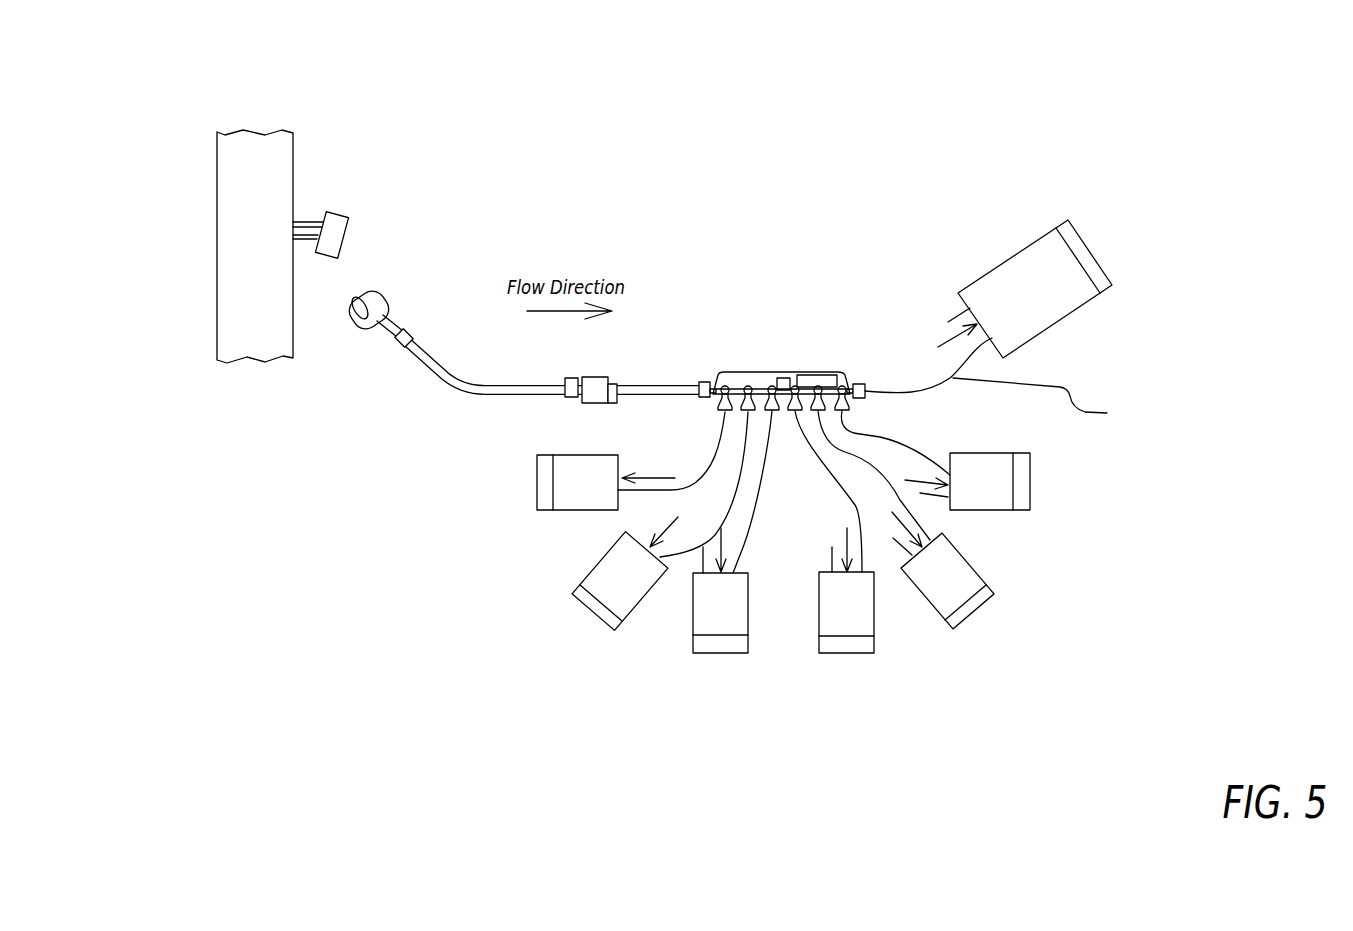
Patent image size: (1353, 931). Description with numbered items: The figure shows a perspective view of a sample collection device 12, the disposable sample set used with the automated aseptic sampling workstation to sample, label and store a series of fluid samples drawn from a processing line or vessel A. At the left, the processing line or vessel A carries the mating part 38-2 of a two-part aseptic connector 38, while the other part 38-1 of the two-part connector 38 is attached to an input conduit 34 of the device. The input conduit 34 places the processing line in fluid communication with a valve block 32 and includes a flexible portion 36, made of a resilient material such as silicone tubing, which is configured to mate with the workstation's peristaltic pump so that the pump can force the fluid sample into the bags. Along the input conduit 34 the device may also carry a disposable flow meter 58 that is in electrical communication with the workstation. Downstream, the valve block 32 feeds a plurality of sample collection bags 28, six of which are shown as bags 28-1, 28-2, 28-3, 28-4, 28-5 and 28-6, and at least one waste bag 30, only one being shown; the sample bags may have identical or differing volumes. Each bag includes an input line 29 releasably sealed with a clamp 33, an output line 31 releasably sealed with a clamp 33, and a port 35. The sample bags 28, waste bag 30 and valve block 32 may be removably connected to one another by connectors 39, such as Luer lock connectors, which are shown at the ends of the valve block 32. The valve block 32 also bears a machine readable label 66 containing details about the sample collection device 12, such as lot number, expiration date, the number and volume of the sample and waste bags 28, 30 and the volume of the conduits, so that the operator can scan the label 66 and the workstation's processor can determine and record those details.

The processing line or vessel A is at (296, 147).
The sample collection device 12 is at (801, 121).
The sample collection bag 28 is at (573, 510).
The sample collection bag 28-1 is at (631, 461).
The sample collection bag 28-2 is at (660, 521).
The sample collection bag 28-3 is at (732, 532).
The sample collection bag 28-4 is at (834, 532).
The sample collection bag 28-5 is at (906, 520).
The sample collection bag 28-6 is at (935, 460).
The input line 29 is at (1000, 383).
The waste bag 30 is at (1035, 289).
The output line 31 is at (938, 337).
The valve block 32 is at (744, 372).
The clamp 33 is at (947, 330).
The input conduit 34 is at (432, 279).
The port 35 is at (955, 308).
The flexible portion 36 is at (457, 390).
The two-part aseptic connector 38 is at (328, 257).
The connector part 38-1 is at (382, 290).
The mating connector part 38-2 is at (348, 213).
The connector 39 is at (700, 381).
The disposable flow meter 58 is at (608, 378).
The machine readable label 66 is at (808, 373).